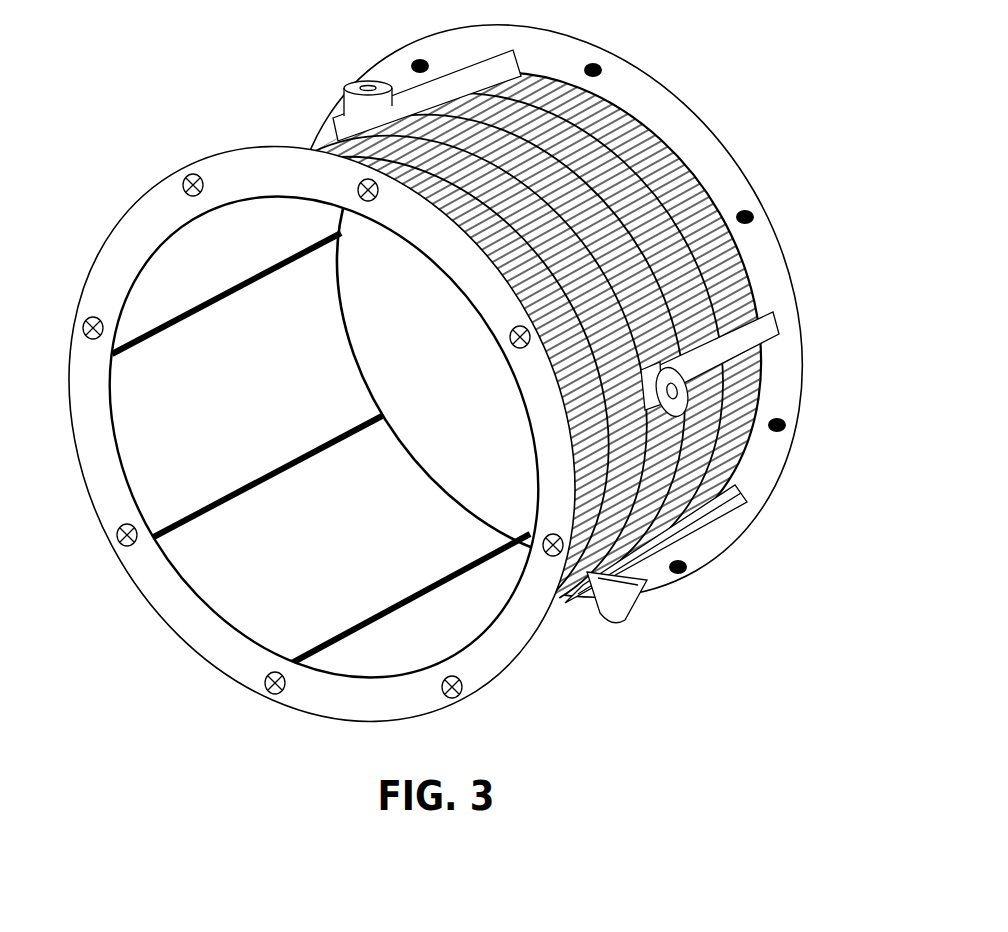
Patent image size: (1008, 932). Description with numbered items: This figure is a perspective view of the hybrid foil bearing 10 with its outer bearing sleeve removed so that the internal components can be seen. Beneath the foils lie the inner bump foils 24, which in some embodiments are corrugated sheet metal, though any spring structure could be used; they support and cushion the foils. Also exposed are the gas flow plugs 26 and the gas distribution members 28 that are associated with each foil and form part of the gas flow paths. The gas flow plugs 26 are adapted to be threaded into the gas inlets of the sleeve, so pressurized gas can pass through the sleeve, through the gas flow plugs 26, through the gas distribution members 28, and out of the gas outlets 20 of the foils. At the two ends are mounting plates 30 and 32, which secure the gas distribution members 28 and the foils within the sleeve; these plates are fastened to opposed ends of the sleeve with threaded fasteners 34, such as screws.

The hybrid foil bearing 10 is at (826, 90).
The gas outlets 20 is at (360, 520).
The inner bump foils 24 is at (623, 115).
The gas flow plugs 26 is at (354, 87).
The gas distribution members 28 is at (500, 50).
The mounting plate 30 is at (74, 258).
The mounting plate 32 is at (810, 467).
The threaded fasteners 34 is at (754, 212).